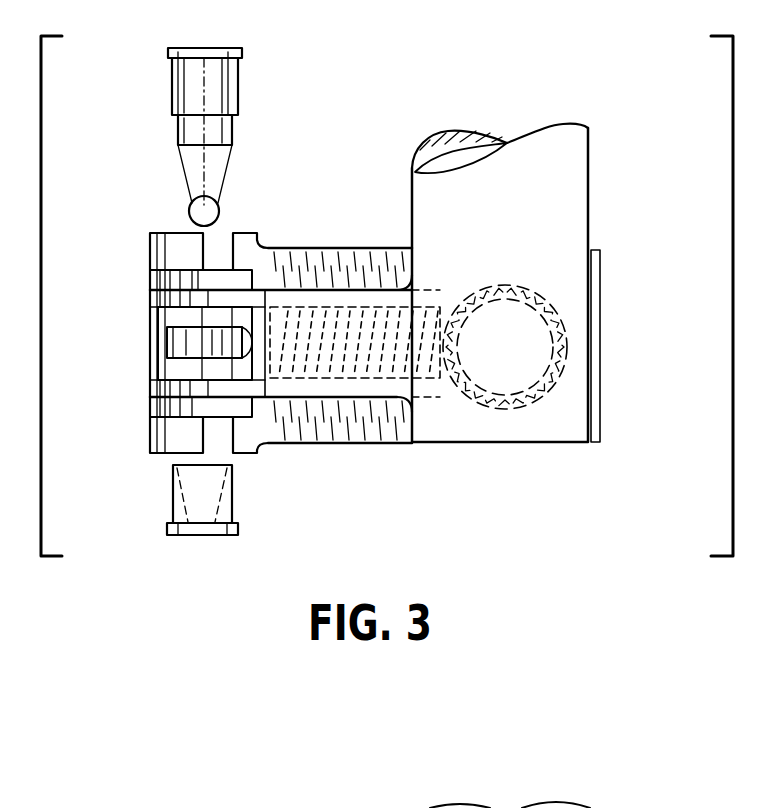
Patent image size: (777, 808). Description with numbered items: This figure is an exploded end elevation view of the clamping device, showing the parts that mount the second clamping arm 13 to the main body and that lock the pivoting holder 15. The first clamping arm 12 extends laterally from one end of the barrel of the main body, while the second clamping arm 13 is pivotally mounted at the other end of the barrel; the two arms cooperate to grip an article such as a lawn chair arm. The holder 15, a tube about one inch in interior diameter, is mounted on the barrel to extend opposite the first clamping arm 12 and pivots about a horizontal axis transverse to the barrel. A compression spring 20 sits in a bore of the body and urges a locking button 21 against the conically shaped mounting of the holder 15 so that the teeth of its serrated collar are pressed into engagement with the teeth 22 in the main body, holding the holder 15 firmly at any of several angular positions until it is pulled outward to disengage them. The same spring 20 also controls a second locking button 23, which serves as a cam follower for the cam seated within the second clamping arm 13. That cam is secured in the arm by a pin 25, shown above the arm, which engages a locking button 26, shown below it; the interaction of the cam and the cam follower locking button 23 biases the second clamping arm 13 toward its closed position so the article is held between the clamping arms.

The first clamping arm 12 is at (340, 427).
The second clamping arm 13 is at (150, 243).
The holder 15 is at (590, 173).
The compression spring 20 is at (345, 288).
The locking button 21 is at (433, 378).
The teeth 22 is at (560, 332).
The locking button 23 is at (268, 256).
The pin 25 is at (238, 73).
The locking button 26 is at (233, 505).